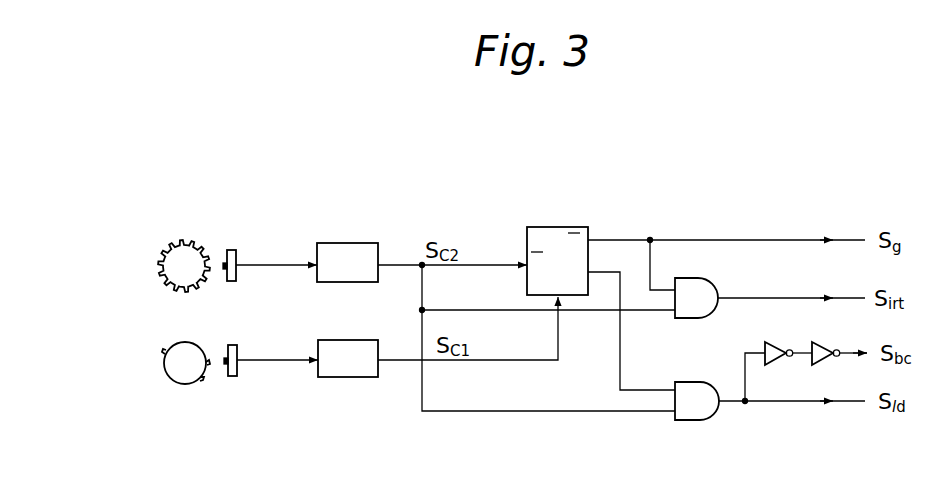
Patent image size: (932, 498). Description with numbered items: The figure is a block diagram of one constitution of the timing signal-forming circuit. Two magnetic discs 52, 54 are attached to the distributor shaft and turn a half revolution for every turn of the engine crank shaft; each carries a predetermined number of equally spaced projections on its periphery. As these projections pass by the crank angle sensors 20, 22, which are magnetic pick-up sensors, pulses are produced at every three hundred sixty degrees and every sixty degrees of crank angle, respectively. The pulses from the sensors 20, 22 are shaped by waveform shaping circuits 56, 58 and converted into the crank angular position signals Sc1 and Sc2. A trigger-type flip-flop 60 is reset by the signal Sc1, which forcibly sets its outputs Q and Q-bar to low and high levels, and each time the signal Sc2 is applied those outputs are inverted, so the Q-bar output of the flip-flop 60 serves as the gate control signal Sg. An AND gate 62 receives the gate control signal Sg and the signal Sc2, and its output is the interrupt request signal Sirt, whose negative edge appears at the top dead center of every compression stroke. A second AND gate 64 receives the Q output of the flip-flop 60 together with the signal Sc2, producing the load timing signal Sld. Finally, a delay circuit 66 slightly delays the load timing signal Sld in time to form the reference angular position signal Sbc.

The magnetic disc 54 is at (193, 240).
The crank angle sensor 22 is at (236, 260).
The waveform shaping circuit 58 is at (366, 243).
The trigger-type flip-flop 60 is at (580, 227).
The AND gate 62 is at (714, 279).
The AND gate 64 is at (708, 382).
The delay circuit 66 is at (817, 342).
The magnetic disc 52 is at (186, 384).
The crank angle sensor 20 is at (232, 376).
The waveform shaping circuit 56 is at (357, 377).